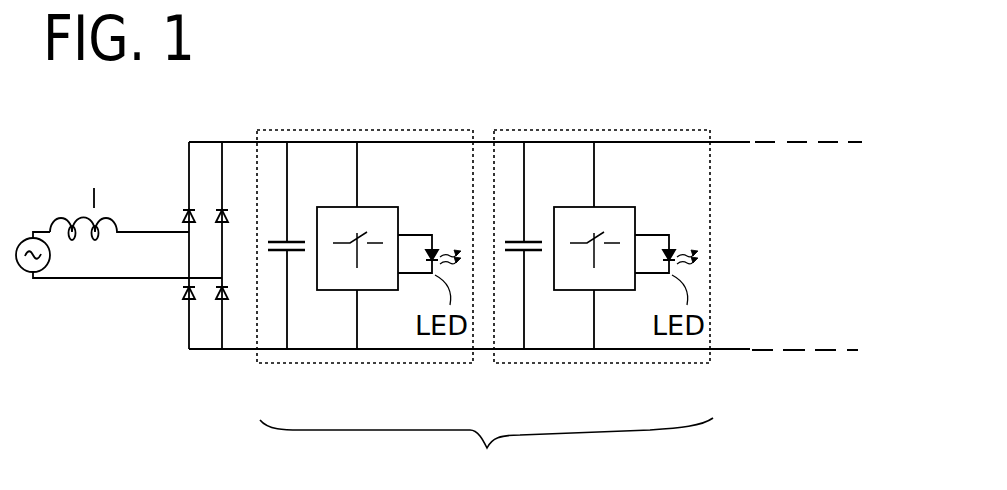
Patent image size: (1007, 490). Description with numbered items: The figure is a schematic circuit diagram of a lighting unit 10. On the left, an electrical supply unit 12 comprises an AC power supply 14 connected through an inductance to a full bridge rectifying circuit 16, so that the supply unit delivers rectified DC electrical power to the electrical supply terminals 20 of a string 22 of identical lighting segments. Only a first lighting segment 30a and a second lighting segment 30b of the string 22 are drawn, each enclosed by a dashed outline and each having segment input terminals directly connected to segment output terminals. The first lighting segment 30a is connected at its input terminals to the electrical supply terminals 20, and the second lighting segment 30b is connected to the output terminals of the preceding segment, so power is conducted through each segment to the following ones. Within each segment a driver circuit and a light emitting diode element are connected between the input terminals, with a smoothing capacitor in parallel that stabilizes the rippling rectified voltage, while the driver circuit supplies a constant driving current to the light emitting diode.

The lighting unit 10 is at (722, 85).
The electrical supply unit 12 is at (119, 267).
The AC power supply 14 is at (25, 237).
The full bridge rectifying circuit 16 is at (163, 176).
The electrical supply terminals 20 is at (243, 140).
The string 22 is at (486, 453).
The first lighting segment 30a is at (393, 128).
The second lighting segment 30b is at (586, 128).